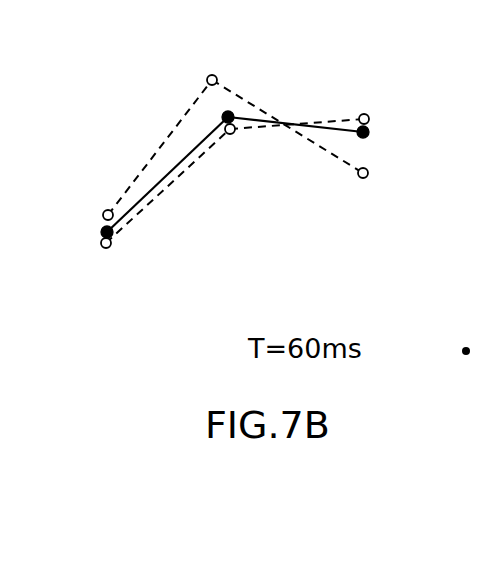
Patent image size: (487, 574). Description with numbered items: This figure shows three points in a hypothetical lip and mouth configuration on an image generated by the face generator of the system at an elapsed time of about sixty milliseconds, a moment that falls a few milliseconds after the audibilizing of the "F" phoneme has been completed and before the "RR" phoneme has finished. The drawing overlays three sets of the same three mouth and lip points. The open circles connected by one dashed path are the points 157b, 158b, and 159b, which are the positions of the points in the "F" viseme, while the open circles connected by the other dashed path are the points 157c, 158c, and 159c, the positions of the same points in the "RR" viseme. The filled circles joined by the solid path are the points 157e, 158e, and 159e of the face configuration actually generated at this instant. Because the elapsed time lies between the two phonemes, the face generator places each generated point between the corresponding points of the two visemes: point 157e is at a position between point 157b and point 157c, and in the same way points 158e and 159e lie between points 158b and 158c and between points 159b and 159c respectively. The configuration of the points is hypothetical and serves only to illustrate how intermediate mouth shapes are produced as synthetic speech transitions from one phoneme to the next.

The point 157b is at (109, 248).
The point 157c is at (107, 209).
The point 157e is at (102, 231).
The point 158b is at (231, 135).
The point 158c is at (207, 76).
The point 158e is at (222, 116).
The point 159b is at (366, 113).
The point 159c is at (367, 178).
The point 159e is at (369, 131).